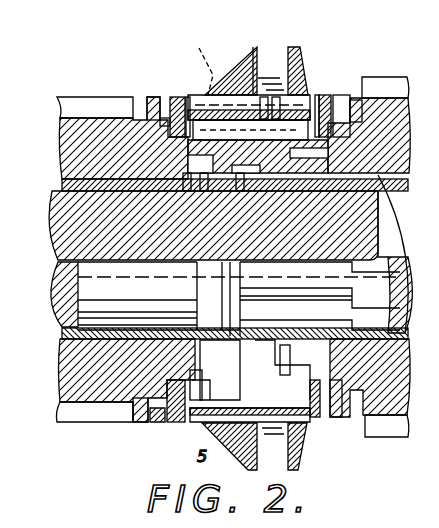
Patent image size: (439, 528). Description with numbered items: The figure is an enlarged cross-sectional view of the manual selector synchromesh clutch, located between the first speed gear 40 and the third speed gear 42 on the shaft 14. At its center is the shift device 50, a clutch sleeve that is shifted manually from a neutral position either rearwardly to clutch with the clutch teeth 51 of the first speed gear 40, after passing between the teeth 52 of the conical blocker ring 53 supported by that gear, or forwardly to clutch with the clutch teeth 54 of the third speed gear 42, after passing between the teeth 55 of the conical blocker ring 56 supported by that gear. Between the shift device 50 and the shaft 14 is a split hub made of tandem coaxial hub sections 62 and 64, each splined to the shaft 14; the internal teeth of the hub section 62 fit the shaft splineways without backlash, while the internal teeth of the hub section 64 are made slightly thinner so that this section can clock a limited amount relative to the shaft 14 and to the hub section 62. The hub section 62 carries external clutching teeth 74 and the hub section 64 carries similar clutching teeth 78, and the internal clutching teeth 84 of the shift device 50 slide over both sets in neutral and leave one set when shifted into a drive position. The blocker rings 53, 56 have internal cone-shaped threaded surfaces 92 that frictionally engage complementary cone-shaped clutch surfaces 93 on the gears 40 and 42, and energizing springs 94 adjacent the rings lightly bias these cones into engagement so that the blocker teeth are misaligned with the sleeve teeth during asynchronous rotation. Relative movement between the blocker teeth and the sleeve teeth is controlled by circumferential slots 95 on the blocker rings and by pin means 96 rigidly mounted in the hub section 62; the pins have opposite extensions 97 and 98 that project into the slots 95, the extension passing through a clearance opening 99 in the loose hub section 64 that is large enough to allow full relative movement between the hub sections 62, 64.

The shaft 14 is at (70, 238).
The first speed gear 40 is at (380, 80).
The third speed gear 42 is at (70, 100).
The shift device 50 is at (235, 70).
The clutch teeth of first speed gear 51 is at (356, 100).
The blocker teeth 52 is at (325, 95).
The blocker ring 53 is at (343, 95).
The clutch teeth of third speed gear 54 is at (150, 98).
The blocker teeth 55 is at (176, 97).
The blocker ring 56 is at (162, 124).
The hub section 62 is at (240, 191).
The hub section 64 is at (295, 80).
The external clutching teeth 74 is at (200, 97).
The clutching teeth 78 is at (264, 97).
The internal clutching teeth 84 is at (194, 66).
The cone-shaped threaded surfaces 92 is at (178, 97).
The cone-shaped clutch surfaces 93 is at (172, 140).
The energizing springs 94 is at (204, 191).
The circumferential slot 95 is at (186, 160).
The pin means 96 is at (250, 130).
The extension 97 is at (186, 191).
The extension 98 is at (276, 84).
The clearance opening 99 is at (276, 97).